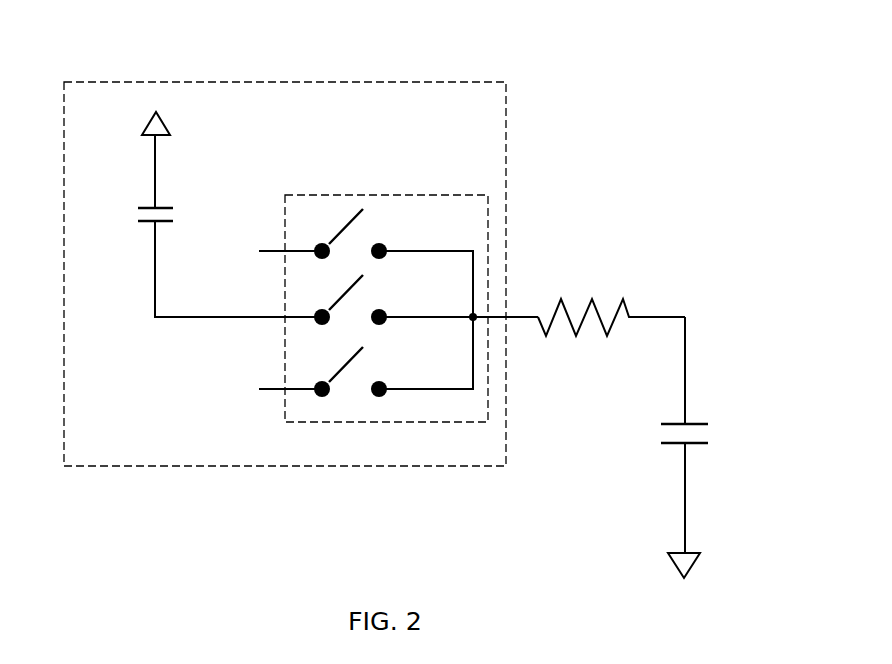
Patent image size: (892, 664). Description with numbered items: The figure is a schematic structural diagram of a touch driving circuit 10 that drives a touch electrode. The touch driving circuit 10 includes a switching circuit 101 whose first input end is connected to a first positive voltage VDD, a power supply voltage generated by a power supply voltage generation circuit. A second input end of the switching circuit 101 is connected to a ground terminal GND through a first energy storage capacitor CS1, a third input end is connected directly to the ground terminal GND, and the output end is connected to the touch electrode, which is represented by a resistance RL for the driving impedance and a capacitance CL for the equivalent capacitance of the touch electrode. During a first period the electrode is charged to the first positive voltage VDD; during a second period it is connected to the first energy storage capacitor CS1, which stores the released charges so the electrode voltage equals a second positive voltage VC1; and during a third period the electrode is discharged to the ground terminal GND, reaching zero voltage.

The touch driving circuit 10 is at (506, 82).
The switching circuit 101 is at (285, 194).
The first energy storage capacitor CS1 is at (207, 214).
The first positive voltage VDD is at (265, 251).
The second positive voltage VC1 is at (266, 305).
The ground terminal GND is at (260, 388).
The resistance RL is at (611, 299).
The capacitance CL is at (666, 447).